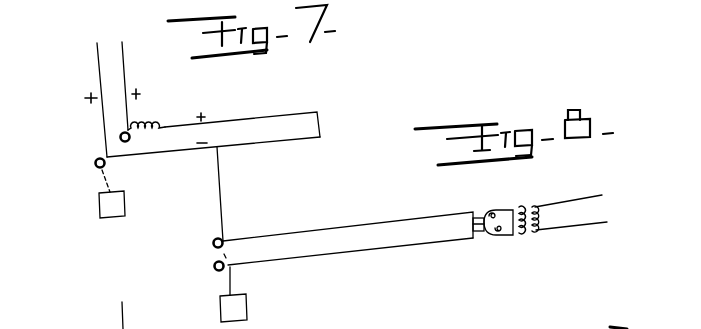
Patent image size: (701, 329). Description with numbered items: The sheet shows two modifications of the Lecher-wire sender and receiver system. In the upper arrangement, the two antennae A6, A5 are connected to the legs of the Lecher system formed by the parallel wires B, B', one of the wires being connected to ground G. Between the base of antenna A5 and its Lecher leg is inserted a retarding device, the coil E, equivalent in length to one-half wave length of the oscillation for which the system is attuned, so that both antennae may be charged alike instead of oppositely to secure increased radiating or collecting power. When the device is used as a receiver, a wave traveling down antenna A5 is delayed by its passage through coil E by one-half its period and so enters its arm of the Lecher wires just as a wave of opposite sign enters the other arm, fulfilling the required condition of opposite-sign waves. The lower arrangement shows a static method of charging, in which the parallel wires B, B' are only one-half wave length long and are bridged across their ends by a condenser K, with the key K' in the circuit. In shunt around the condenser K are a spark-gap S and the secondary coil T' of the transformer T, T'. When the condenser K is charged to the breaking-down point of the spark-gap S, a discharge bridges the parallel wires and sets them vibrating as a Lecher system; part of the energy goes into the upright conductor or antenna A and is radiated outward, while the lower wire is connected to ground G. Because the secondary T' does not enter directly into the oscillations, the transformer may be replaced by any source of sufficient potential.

In FIG. 7, the antenna A6 is at (97, 67).
In FIG. 7, the antenna A5 is at (125, 62).
In FIG. 7, the coil E is at (145, 112).
In FIG. 7, the Lecher wire B is at (242, 110).
In FIG. 8, the Lecher wire B is at (348, 222).
In FIG. 7, the Lecher wire B' is at (213, 159).
In FIG. 8, the Lecher wire B' is at (350, 265).
In FIG. 8, the upright conductor or antenna A is at (218, 188).
In FIG. 7, the ground G is at (111, 189).
In FIG. 8, the ground G is at (231, 281).
In FIG. 8, the condenser K is at (466, 227).
In FIG. 8, the spark-gap S is at (505, 232).
In FIG. 8, the secondary coil T' is at (535, 200).
In FIG. 8, the transformer T is at (569, 231).
In FIG. 8, the key K' is at (388, 317).